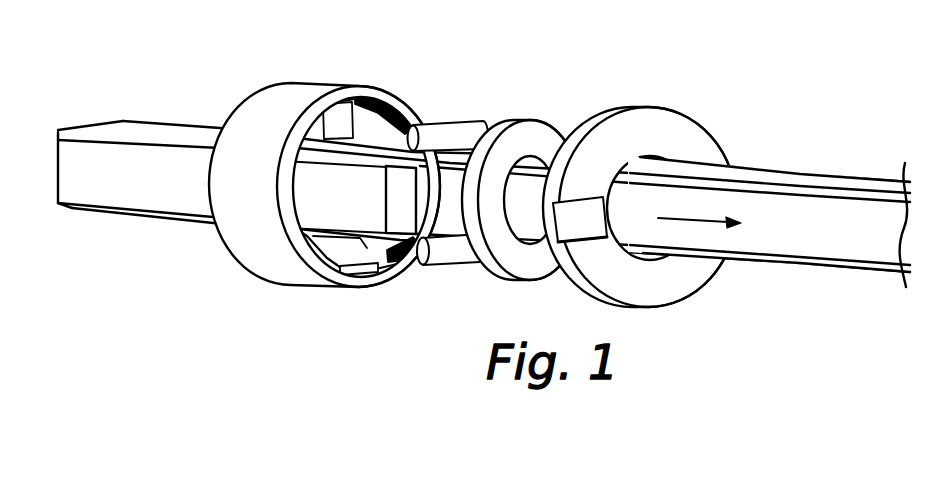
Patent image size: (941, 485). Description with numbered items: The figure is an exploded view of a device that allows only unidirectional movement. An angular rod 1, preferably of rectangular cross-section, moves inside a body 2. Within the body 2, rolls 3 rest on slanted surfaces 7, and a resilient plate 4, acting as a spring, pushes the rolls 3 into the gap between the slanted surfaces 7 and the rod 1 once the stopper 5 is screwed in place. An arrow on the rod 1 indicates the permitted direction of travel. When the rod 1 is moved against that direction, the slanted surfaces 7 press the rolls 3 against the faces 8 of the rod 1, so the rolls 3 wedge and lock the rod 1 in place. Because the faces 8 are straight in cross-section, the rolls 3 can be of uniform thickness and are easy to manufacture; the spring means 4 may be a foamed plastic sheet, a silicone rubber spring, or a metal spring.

The rod 1 is at (484, 194).
The body 2 is at (295, 110).
The rolls 3 is at (460, 128).
The resilient plate 4 is at (540, 130).
The stopper 5 is at (655, 125).
The slanted surfaces 7 is at (372, 272).
The faces of the rod 8 is at (818, 182).